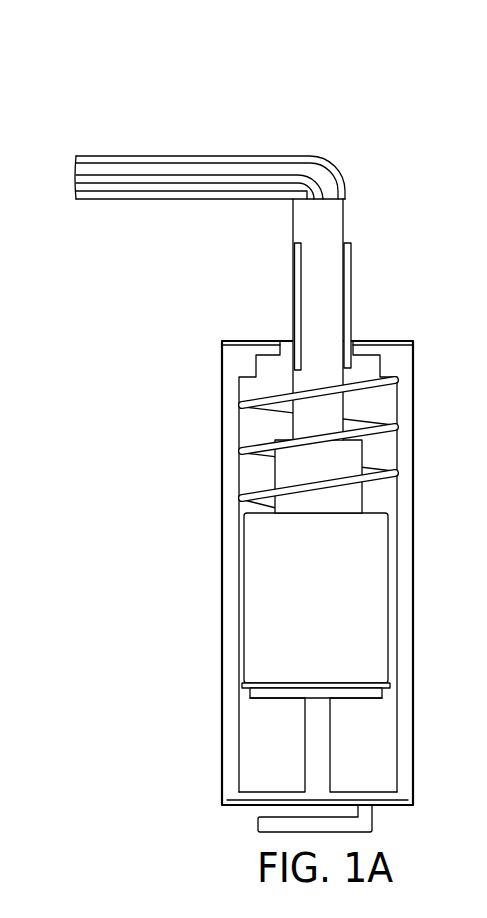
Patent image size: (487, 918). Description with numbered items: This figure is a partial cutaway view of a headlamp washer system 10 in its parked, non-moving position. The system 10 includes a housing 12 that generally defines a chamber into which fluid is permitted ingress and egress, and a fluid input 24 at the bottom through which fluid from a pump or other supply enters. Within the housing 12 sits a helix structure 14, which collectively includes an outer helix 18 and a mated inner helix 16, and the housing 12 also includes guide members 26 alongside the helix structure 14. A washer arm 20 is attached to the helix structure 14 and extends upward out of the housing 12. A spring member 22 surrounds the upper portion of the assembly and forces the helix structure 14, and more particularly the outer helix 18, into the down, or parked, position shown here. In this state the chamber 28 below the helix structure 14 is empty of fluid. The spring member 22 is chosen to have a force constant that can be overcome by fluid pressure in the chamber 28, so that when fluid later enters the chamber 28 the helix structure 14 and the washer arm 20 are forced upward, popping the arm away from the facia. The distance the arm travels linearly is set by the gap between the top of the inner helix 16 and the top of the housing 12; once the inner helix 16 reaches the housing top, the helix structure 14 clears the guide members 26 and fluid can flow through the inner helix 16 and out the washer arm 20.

The system 10 is at (412, 264).
The housing 12 is at (404, 392).
The helix structure 14 is at (341, 470).
The inner helix 16 is at (358, 448).
The outer helix 18 is at (365, 632).
The washer arm 20 is at (304, 232).
The spring member 22 is at (318, 457).
The fluid input 24 is at (237, 829).
The guide members 26 is at (320, 758).
The chamber 28 is at (250, 748).